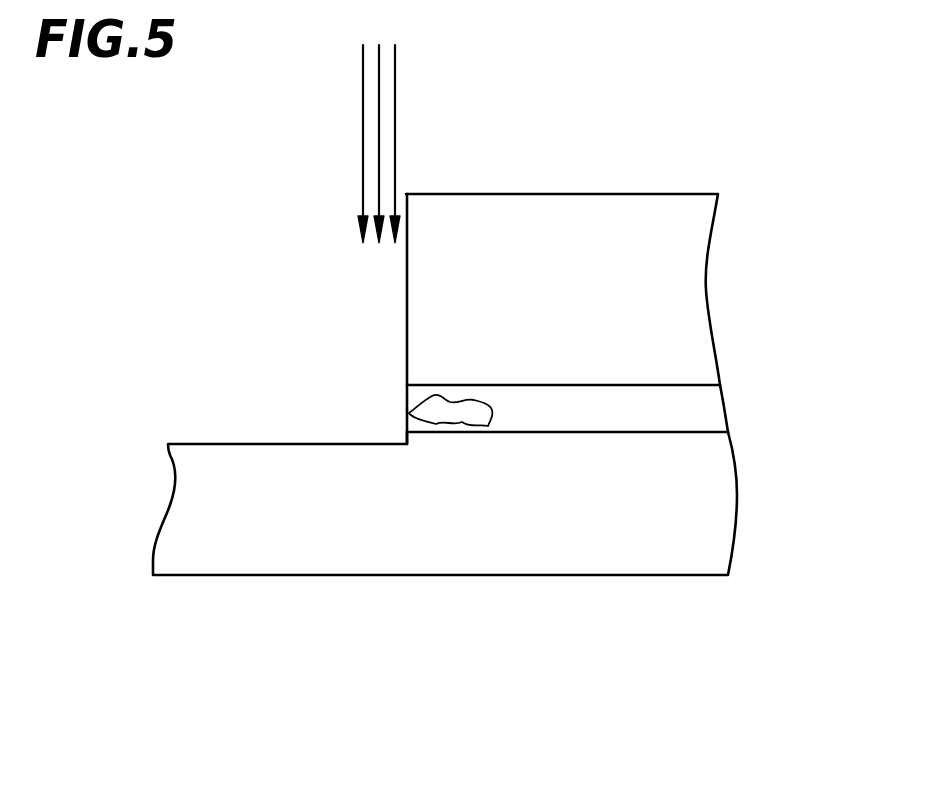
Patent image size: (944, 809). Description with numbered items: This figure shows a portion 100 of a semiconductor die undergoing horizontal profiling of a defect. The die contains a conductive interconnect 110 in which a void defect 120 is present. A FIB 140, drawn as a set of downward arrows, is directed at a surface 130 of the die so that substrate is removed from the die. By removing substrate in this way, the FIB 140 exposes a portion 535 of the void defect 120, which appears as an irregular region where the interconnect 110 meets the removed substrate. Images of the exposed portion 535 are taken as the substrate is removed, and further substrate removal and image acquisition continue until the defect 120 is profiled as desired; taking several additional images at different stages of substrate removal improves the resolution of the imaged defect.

The portion of semiconductor die 100 is at (560, 632).
The conductive interconnect 110 is at (717, 410).
The void defect 120 is at (442, 415).
The surface 130 is at (632, 194).
The FIB 140 is at (402, 115).
The exposed portion of the defect 535 is at (403, 415).